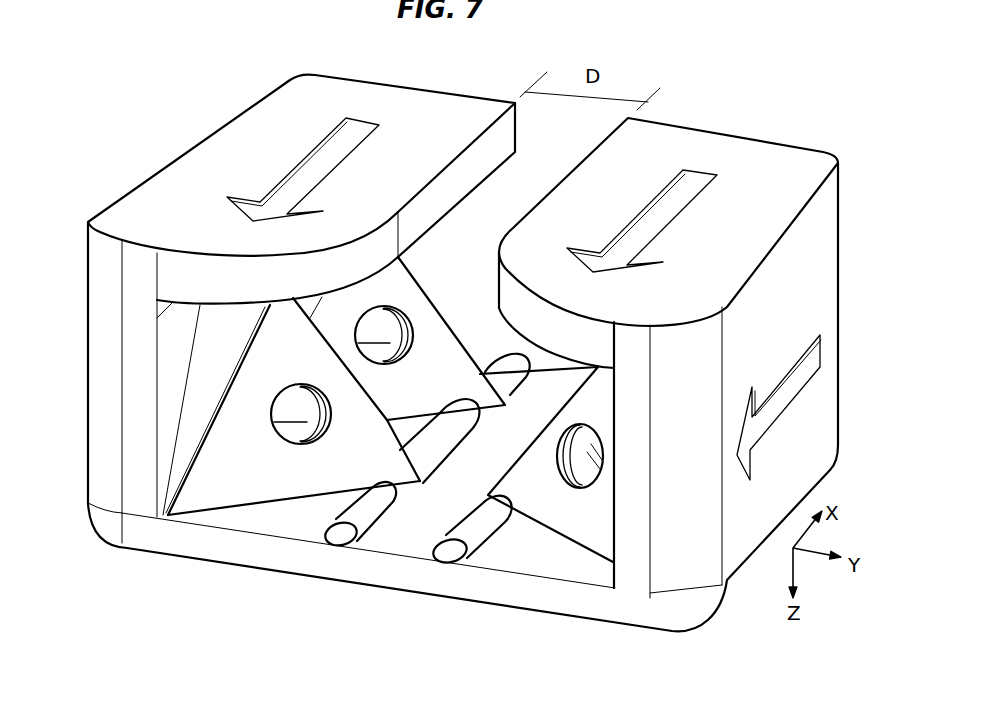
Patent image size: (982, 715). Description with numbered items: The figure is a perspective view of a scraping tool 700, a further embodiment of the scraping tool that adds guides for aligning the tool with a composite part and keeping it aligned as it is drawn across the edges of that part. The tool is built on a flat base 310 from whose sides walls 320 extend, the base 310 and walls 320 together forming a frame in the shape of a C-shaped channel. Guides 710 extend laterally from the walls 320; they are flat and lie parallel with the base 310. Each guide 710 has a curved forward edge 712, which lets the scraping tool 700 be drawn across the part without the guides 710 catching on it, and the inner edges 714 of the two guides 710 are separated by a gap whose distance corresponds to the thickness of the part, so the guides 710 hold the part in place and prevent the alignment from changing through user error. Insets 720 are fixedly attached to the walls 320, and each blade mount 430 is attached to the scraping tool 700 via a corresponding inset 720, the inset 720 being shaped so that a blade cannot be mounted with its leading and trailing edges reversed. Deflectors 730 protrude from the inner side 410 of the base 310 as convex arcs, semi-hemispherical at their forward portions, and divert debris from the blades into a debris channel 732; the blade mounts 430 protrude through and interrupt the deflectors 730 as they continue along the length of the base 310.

The scraping tool 700 is at (466, 337).
The guides 710 is at (422, 86).
The curved forward edges 712 is at (226, 250).
The inner edges 714 is at (452, 156).
The insets 720 is at (217, 347).
The deflectors 730 is at (510, 378).
The debris channel 732 is at (443, 508).
The base 310 is at (285, 575).
The walls 320 is at (88, 390).
The inner side 410 is at (273, 515).
The blade mounts 430 is at (423, 312).